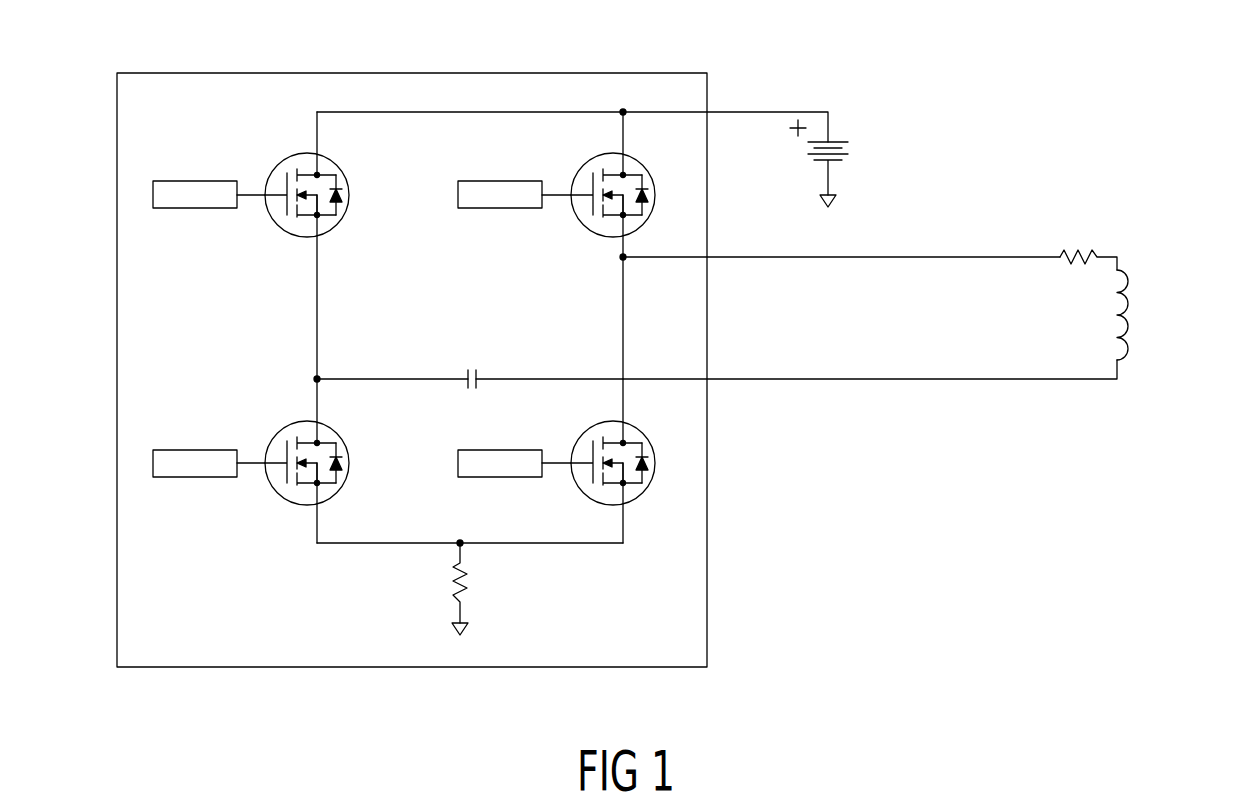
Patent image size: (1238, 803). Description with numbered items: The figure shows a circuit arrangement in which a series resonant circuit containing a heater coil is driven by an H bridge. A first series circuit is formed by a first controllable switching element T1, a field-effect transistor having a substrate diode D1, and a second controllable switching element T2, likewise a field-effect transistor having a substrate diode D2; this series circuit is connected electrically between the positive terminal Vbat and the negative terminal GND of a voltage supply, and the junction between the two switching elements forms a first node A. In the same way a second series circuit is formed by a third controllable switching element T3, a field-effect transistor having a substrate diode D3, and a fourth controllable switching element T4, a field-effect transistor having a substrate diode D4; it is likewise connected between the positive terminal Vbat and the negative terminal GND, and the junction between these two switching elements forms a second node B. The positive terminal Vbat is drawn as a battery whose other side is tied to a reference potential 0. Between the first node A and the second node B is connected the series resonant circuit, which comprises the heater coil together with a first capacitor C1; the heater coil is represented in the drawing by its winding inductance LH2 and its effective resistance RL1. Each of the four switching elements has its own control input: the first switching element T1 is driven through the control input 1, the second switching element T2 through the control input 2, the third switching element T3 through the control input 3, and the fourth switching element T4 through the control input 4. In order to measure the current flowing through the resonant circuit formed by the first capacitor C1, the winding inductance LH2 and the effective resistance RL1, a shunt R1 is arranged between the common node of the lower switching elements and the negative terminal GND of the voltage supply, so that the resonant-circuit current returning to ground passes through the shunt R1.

The first controllable switching element T1 is at (340, 173).
The second controllable switching element T2 is at (340, 443).
The third controllable switching element T3 is at (639, 173).
The fourth controllable switching element T4 is at (639, 443).
The substrate diode D1 is at (341, 195).
The substrate diode D2 is at (341, 463).
The substrate diode D3 is at (647, 195).
The substrate diode D4 is at (647, 463).
The control input 1 is at (209, 196).
The control input 2 is at (209, 465).
The control input 3 is at (514, 196).
The control input 4 is at (514, 465).
The first capacitor C1 is at (474, 359).
The shunt R1 is at (440, 581).
The effective resistance RL1 is at (1088, 237).
The winding inductance LH2 is at (1152, 315).
The positive terminal Vbat is at (851, 157).
The reference potential of battery 0 is at (828, 220).
The negative terminal GND is at (491, 645).
The first node A is at (482, 359).
The second node B is at (840, 276).